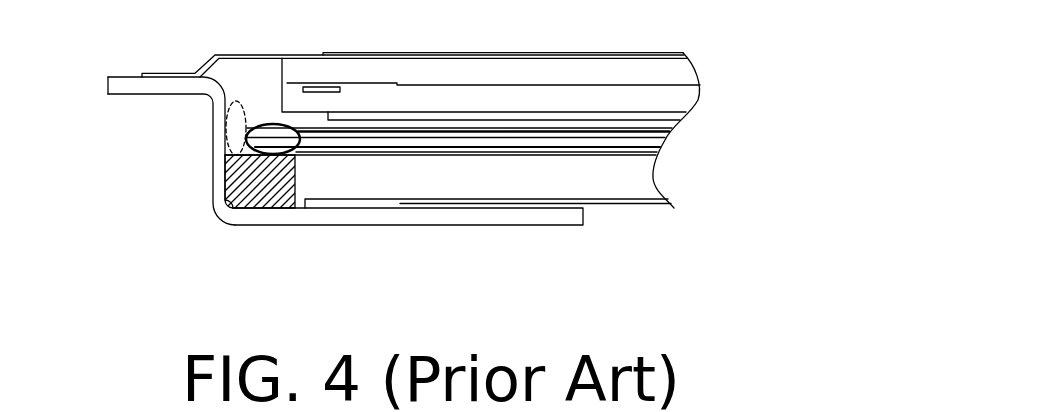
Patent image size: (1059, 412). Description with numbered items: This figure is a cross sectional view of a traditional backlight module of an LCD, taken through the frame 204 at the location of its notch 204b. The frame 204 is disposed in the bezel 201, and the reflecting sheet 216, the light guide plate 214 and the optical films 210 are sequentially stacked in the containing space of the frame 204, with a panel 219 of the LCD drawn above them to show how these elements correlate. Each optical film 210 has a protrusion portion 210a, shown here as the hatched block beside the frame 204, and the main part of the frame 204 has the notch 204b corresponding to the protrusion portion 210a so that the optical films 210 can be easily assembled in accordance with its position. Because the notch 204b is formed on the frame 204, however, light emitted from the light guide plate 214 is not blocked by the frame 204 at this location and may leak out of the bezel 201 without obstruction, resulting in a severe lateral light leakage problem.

The bezel 201 is at (124, 84).
The frame 204 is at (267, 208).
The notch 204b is at (222, 129).
The optical films 210 is at (743, 119).
The protrusion portion 210a is at (238, 180).
The light guide plate 214 is at (652, 178).
The reflecting sheet 216 is at (482, 203).
The panel 219 is at (743, 58).